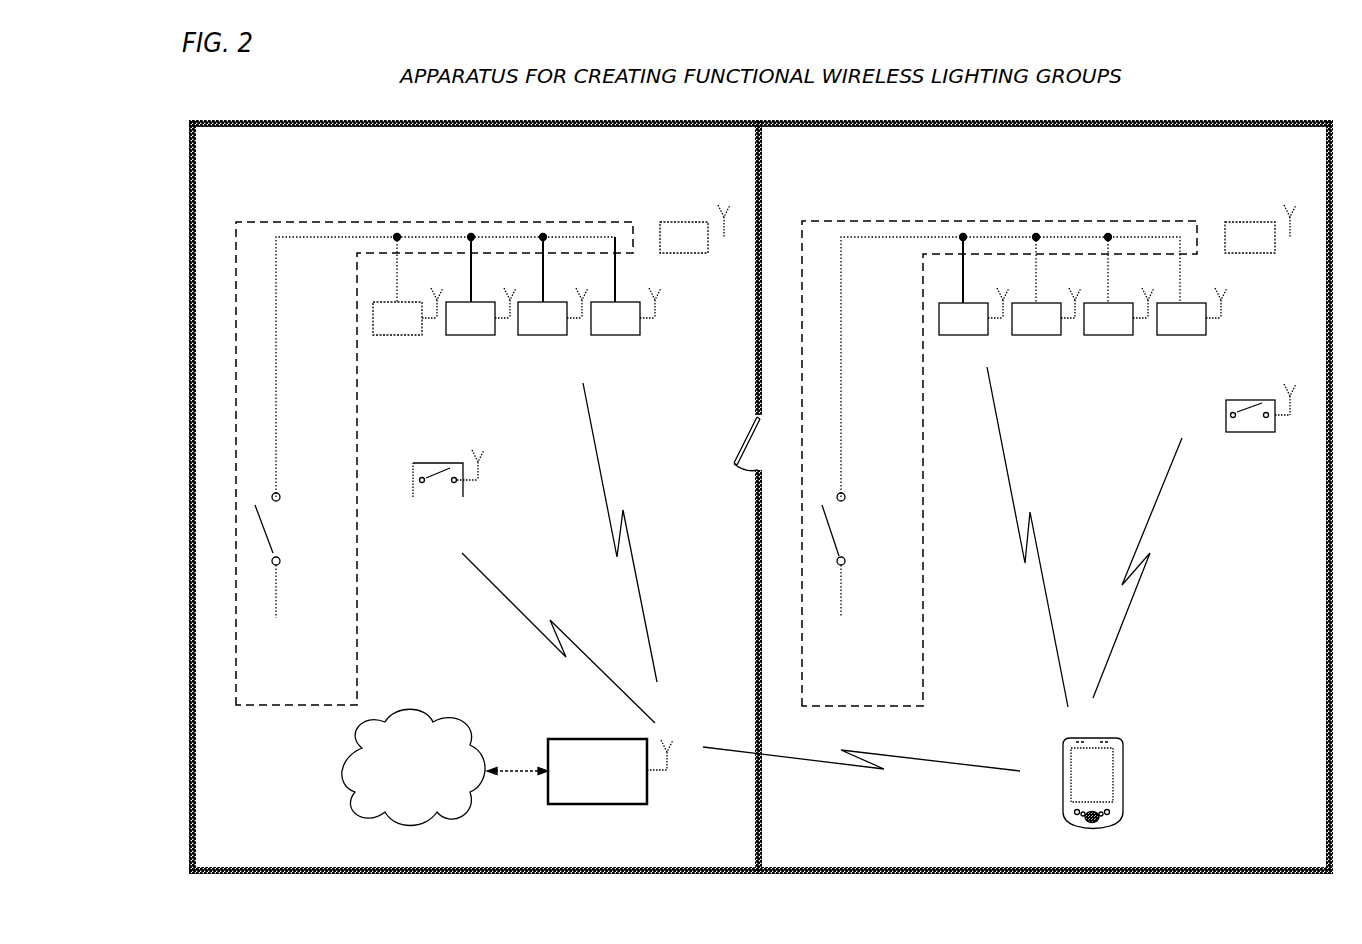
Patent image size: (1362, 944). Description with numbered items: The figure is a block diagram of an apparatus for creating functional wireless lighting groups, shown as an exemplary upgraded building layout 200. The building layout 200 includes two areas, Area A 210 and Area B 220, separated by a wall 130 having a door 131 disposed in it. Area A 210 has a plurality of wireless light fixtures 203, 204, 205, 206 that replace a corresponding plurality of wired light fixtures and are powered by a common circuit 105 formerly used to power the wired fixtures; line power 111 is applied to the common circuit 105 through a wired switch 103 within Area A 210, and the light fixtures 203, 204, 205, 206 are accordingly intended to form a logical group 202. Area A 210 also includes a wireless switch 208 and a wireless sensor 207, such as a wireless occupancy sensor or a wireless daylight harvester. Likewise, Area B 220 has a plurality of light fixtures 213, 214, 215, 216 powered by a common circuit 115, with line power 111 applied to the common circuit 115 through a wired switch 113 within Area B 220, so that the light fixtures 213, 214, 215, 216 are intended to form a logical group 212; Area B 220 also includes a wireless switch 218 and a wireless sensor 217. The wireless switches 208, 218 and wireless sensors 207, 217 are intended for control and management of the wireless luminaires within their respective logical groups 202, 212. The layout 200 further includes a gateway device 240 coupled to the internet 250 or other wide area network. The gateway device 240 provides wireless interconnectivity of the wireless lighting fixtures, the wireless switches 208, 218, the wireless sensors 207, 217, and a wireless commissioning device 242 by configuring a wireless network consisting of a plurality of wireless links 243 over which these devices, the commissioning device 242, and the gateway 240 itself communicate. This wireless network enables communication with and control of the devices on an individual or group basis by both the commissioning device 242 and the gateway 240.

The upgraded building layout 200 is at (1250, 86).
The wall 130 is at (762, 168).
The door 131 is at (747, 434).
The Area A 210 is at (433, 168).
The Area B 220 is at (1016, 168).
The common circuit 105 is at (280, 222).
The common circuit 115 is at (874, 221).
The wired switch 103 is at (294, 529).
The wired switch 113 is at (860, 530).
The line power 111 is at (558, 662).
The logical group 202 is at (676, 318).
The wireless light fixture 203 is at (386, 326).
The wireless light fixture 204 is at (459, 326).
The wireless light fixture 205 is at (531, 326).
The wireless light fixture 206 is at (604, 326).
The wireless sensor 207 is at (672, 245).
The wireless switch 208 is at (437, 497).
The logical group 212 is at (1243, 318).
The wireless light fixture 213 is at (952, 326).
The wireless light fixture 214 is at (1025, 326).
The wireless light fixture 215 is at (1097, 326).
The wireless light fixture 216 is at (1170, 326).
The wireless sensor 217 is at (1238, 245).
The wireless switch 218 is at (1250, 432).
The gateway device 240 is at (568, 768).
The wireless commissioning device 242 is at (1092, 738).
The wireless link 243 is at (526, 613).
The internet 250 is at (379, 769).